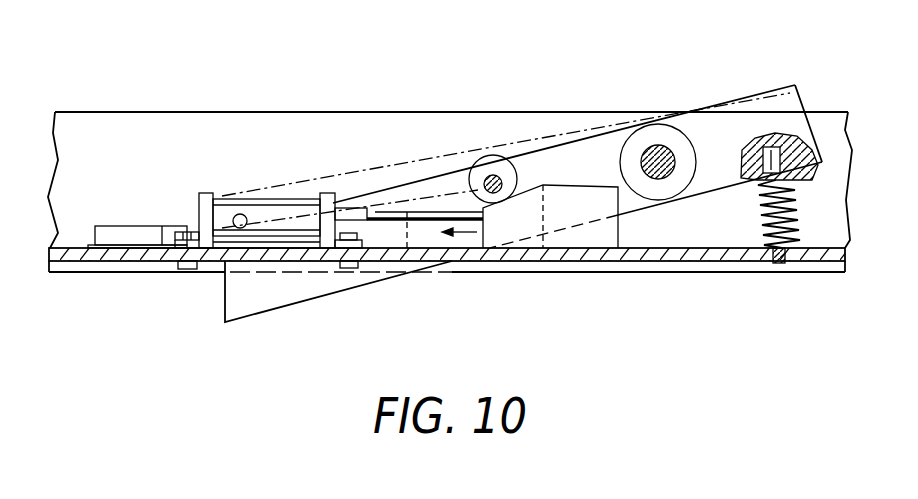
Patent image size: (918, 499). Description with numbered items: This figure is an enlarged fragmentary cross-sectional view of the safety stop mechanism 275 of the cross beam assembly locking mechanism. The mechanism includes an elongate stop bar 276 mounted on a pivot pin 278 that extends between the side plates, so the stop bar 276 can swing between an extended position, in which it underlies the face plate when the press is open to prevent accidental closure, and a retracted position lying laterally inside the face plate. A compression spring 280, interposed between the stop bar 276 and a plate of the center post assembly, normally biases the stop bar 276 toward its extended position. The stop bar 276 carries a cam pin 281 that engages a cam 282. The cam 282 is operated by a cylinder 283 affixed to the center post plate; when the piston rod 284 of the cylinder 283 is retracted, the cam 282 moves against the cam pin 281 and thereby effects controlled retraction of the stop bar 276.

The safety stop mechanism 275 is at (560, 106).
The stop bar 276 is at (752, 96).
The pivot pin 278 is at (658, 145).
The compression spring 280 is at (757, 213).
The cam pin 281 is at (496, 155).
The cam 282 is at (560, 186).
The cylinder 283 is at (260, 197).
The piston rod 284 is at (393, 210).